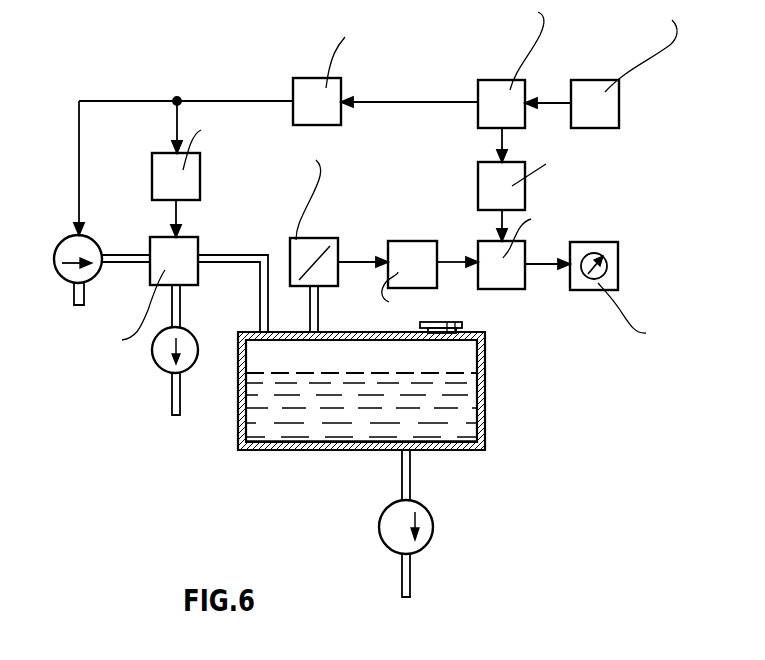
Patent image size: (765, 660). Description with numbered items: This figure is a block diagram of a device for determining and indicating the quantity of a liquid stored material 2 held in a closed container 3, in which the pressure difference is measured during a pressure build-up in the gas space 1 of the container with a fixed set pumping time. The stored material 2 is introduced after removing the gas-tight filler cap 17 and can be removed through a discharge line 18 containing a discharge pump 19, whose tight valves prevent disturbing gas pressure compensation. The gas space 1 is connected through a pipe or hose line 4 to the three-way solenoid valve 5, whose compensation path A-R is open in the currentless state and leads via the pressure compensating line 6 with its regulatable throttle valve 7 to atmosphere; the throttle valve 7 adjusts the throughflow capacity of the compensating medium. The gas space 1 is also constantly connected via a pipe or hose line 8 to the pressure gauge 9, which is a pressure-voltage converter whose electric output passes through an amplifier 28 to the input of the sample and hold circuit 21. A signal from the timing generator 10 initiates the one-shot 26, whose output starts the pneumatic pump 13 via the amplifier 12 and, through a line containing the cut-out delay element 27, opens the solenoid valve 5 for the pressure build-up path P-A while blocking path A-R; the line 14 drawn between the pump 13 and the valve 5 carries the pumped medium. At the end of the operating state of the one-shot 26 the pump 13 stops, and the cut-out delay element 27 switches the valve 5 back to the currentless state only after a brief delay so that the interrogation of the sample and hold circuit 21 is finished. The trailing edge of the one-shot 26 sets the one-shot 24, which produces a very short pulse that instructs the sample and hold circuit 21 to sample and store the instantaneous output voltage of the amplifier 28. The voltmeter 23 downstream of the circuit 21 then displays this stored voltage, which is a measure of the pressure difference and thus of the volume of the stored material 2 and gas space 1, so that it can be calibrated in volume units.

The gas space 1 is at (276, 350).
The stored liquid material 2 is at (324, 400).
The closed container 3 is at (371, 446).
The pipe or hose line 4 is at (228, 268).
The three-way solenoid valve 5 is at (150, 250).
The pressure compensating line 6 is at (172, 396).
The regulatable throttle valve 7 is at (194, 371).
The pipe or hose line 8 is at (318, 327).
The pressure gauge 9 is at (291, 252).
The timing generator 10 is at (590, 80).
The amplifier 12 is at (316, 78).
The pneumatic pump 13 is at (62, 280).
The pipe from pump to solenoid valve 14 is at (133, 265).
The gas-tight filler cap 17 is at (462, 325).
The discharge line 18 is at (402, 577).
The discharge pump 19 is at (428, 548).
The sample and hold circuit 21 is at (511, 289).
The voltmeter 23 is at (598, 292).
The one-shot 24 is at (478, 191).
The one-shot 26 is at (500, 80).
The cut-out delay element 27 is at (152, 172).
The amplifier 28 is at (398, 240).